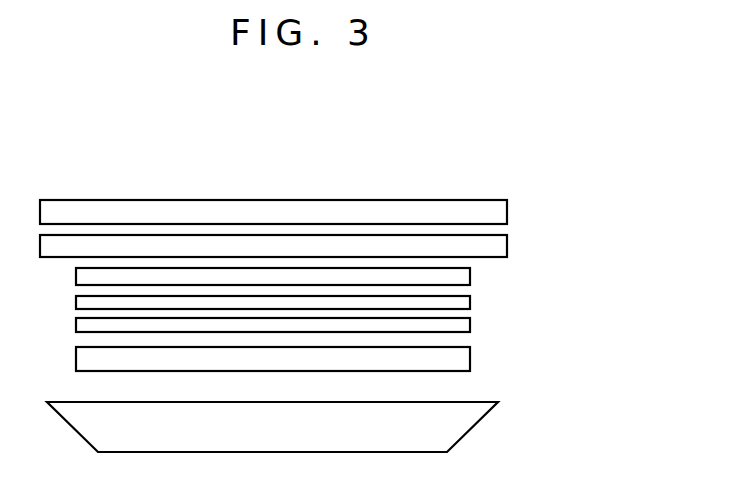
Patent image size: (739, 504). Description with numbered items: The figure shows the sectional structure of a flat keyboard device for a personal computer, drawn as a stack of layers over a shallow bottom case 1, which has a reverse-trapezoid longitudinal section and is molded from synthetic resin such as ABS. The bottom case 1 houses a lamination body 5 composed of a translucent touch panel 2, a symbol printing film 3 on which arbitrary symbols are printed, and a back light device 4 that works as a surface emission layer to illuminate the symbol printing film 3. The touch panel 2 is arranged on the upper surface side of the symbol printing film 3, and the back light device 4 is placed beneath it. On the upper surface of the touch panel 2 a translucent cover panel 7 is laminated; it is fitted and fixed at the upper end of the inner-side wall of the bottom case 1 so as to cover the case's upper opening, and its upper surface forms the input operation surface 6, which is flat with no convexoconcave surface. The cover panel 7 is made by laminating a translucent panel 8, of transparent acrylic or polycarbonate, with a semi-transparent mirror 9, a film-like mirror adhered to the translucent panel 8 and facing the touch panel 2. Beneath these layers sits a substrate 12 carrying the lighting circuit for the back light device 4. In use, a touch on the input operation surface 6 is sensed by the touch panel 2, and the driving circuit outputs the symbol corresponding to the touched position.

The bottom case 1 is at (470, 432).
The touch panel 2 is at (470, 275).
The symbol printing film 3 is at (470, 302).
The back light device 4 is at (470, 324).
The lamination body 5 is at (372, 314).
The input operation surface 6 is at (152, 200).
The cover panel 7 is at (368, 179).
The translucent panel 8 is at (344, 162).
The semi-transparent mirror 9 is at (507, 246).
The substrate 12 is at (470, 358).